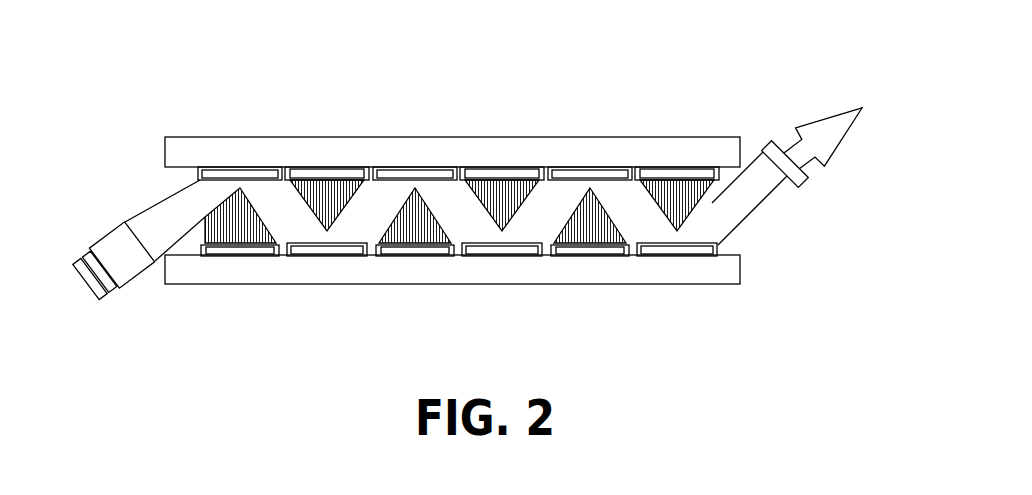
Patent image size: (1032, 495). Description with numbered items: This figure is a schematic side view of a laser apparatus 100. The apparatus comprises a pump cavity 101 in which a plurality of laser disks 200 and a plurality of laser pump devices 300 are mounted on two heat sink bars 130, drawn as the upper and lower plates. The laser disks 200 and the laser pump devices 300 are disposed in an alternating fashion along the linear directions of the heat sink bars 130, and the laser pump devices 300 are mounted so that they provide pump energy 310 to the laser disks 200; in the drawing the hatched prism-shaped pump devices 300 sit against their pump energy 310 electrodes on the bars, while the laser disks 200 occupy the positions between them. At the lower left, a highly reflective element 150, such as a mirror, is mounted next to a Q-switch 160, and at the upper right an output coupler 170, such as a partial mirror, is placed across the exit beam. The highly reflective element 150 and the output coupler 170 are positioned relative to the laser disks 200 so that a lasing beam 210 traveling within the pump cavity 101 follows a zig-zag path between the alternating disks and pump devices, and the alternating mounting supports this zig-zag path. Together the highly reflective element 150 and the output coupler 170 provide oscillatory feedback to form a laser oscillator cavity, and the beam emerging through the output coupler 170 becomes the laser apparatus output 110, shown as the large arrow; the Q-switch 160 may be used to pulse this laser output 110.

The laser apparatus 100 is at (475, 54).
The pump cavity 101 is at (761, 232).
The laser apparatus output 110 is at (836, 140).
The heat sink bars 130 is at (176, 150).
The highly reflective element 150 is at (94, 300).
The Q-switch 160 is at (123, 243).
The output coupler 170 is at (797, 188).
The laser disks 200 is at (233, 172).
The lasing beam 210 is at (174, 209).
The laser pump devices 300 is at (313, 172).
The pump energy 310 is at (356, 176).